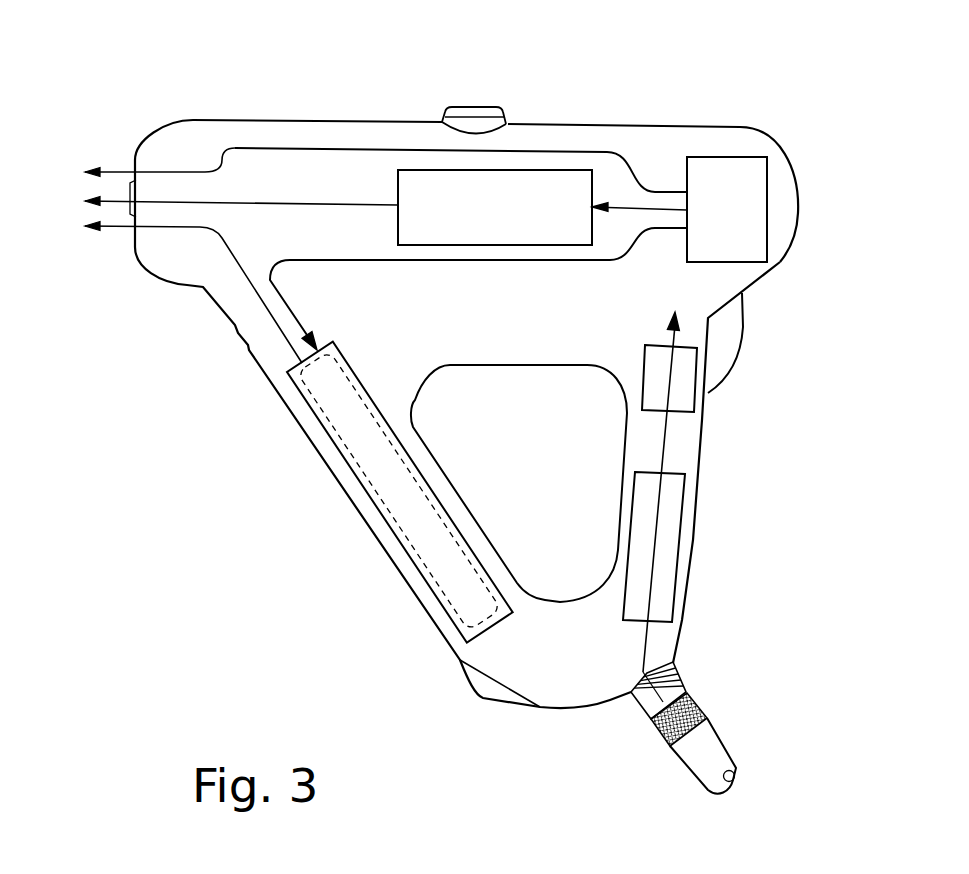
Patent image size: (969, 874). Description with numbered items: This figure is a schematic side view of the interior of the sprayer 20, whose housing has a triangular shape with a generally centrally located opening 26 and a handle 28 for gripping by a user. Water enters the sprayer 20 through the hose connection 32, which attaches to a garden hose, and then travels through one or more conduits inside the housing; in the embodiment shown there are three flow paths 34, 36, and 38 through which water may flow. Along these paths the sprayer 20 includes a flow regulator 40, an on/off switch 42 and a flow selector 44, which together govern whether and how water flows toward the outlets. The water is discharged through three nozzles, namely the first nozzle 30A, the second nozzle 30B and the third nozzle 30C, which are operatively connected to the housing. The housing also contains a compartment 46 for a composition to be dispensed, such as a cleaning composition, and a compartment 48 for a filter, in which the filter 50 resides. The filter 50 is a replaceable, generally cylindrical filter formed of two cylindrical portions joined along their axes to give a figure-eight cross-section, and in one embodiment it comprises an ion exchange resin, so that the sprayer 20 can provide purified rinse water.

The sprayer 20 is at (552, 92).
The opening 26 is at (512, 487).
The handle 28 is at (680, 450).
The first nozzle 30A is at (130, 165).
The second nozzle 30B is at (211, 193).
The third nozzle 30C is at (163, 286).
The hose connection 32 is at (680, 690).
The flow path 34 is at (607, 152).
The flow path 36 is at (670, 210).
The flow path 38 is at (593, 263).
The flow regulator 40 is at (670, 552).
The on/off switch 42 is at (683, 385).
The flow selector 44 is at (732, 229).
The compartment for a composition 46 is at (452, 221).
The compartment for a filter 48 is at (320, 423).
The filter 50 is at (385, 465).